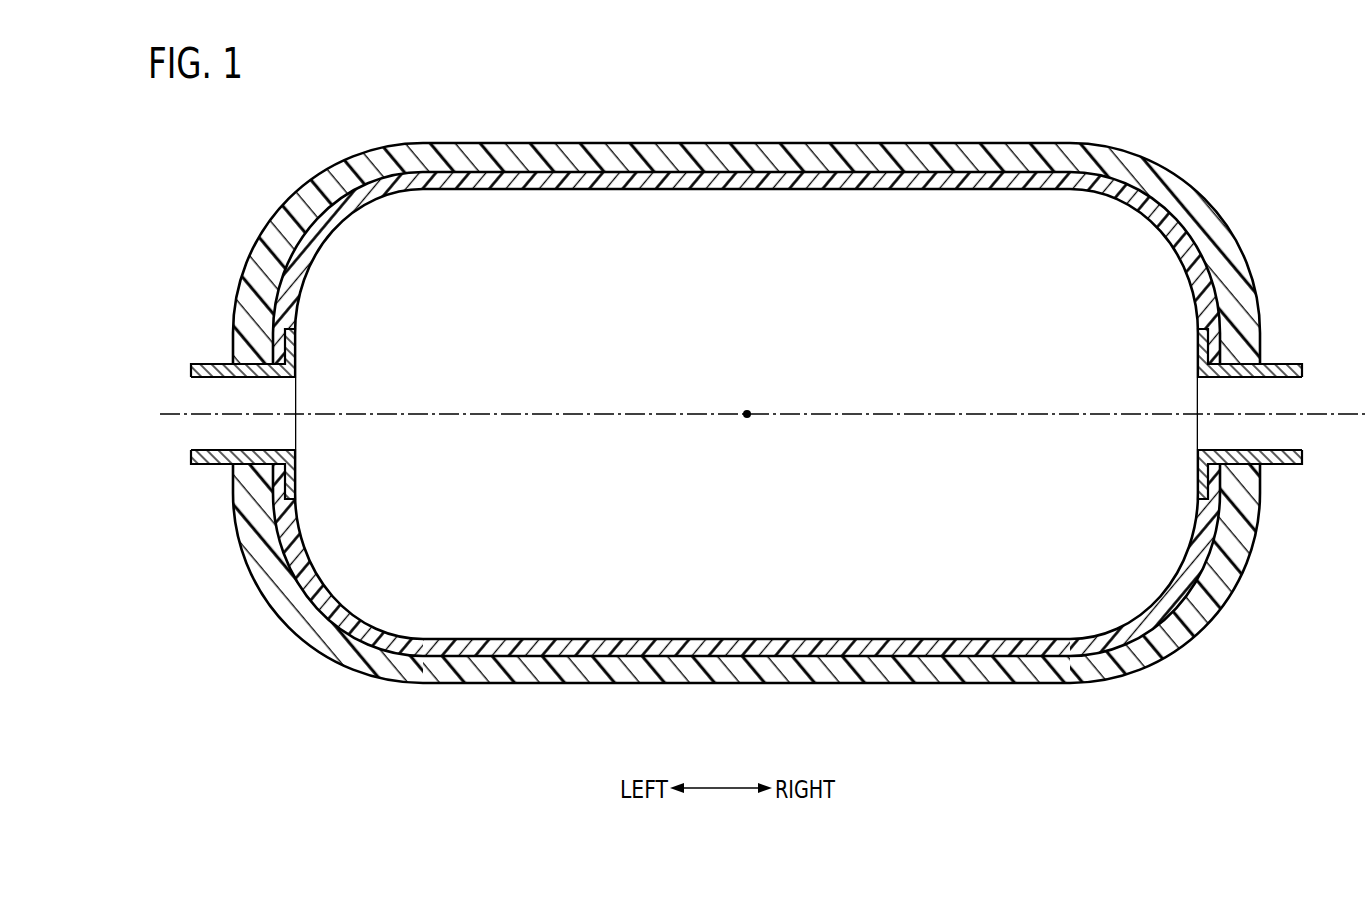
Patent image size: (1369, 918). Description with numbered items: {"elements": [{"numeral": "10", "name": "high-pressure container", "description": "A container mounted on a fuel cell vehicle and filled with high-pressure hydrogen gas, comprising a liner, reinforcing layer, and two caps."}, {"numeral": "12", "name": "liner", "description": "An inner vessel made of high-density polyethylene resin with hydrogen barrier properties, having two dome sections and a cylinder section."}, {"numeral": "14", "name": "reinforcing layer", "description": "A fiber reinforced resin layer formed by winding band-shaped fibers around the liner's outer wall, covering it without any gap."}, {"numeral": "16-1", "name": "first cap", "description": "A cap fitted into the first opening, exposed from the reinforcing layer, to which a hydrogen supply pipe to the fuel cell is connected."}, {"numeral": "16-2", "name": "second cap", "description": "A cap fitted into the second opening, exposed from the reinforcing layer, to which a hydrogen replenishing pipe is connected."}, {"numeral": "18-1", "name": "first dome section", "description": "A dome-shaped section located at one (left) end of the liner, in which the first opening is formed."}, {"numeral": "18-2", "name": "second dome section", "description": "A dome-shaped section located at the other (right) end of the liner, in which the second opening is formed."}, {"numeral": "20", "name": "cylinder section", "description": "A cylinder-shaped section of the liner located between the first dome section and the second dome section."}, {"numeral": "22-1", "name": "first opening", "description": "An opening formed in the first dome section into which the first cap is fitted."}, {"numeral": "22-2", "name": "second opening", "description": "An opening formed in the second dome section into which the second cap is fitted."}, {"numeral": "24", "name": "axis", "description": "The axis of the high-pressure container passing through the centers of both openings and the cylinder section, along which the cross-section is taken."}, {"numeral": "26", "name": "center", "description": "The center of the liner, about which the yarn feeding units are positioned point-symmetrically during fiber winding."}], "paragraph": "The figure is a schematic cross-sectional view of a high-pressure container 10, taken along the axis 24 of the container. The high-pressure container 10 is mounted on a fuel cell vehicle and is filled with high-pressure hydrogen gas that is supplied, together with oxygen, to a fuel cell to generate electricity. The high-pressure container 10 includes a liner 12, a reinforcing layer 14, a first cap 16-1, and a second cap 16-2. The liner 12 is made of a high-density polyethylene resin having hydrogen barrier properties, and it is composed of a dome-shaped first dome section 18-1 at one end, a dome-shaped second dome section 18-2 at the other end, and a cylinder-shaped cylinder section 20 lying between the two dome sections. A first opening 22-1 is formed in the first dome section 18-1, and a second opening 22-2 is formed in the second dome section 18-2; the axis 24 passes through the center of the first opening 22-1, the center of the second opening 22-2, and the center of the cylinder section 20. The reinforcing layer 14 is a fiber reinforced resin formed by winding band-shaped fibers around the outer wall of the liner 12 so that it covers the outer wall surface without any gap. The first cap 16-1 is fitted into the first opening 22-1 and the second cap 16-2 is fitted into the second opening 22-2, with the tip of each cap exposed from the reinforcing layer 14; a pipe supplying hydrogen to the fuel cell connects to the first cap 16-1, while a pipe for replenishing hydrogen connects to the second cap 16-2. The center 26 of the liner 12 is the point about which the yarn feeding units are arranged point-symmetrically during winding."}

The high-pressure tank 10 is at (621, 92).
The liner 12 is at (967, 182).
The reinforcing layer 14 is at (1003, 157).
The first boss 16-1 is at (202, 363).
The second boss 16-2 is at (1283, 362).
The first dome portion 18-1 is at (302, 600).
The second dome portion 18-2 is at (1208, 607).
The cylinder portion 20 is at (738, 650).
The first opening 22-1 is at (280, 367).
The second opening 22-2 is at (1215, 368).
The central axis 24 is at (163, 412).
The center of tank 26 is at (748, 410).